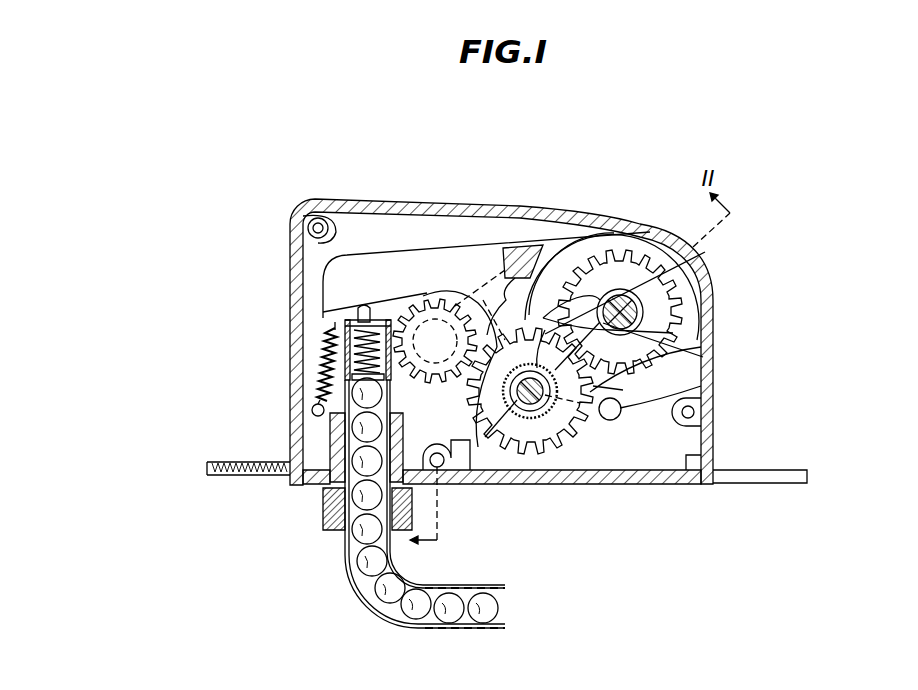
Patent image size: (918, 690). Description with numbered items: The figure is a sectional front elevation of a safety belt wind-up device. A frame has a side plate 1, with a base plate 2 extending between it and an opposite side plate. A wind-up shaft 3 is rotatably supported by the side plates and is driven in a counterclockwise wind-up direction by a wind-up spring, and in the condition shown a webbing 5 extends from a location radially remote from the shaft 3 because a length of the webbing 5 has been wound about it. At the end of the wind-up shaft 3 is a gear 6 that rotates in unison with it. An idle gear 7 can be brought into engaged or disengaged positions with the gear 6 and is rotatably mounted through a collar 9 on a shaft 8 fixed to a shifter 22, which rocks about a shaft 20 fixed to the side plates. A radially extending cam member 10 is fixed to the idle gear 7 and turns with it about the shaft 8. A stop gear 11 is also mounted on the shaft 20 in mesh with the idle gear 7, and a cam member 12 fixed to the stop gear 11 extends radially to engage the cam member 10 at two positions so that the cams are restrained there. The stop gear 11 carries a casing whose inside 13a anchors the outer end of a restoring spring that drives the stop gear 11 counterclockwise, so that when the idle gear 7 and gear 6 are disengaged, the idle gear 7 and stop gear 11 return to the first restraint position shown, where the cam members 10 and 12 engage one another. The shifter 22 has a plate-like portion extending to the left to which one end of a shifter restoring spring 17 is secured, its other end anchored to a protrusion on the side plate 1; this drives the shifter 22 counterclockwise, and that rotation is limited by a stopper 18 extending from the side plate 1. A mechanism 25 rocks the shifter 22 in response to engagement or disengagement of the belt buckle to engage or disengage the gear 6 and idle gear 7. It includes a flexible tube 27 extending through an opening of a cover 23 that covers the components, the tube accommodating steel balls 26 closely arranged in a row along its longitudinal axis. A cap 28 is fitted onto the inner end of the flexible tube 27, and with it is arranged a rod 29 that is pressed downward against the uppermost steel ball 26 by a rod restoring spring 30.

The side plate 1 is at (681, 458).
The base plate 2 is at (738, 476).
The wind-up shaft 3 is at (466, 440).
The webbing 5 is at (256, 462).
The gear 6 is at (427, 295).
The idle gear 7 is at (556, 440).
The shaft 8 is at (531, 412).
The collar 9 is at (567, 400).
The cam member 10 is at (548, 300).
The stop gear 11 is at (632, 250).
The cam member 12 is at (645, 313).
The inside of casing 13a is at (697, 276).
The shifter restoring spring 17 is at (320, 385).
The stopper 18 is at (701, 405).
The shaft 20 is at (701, 362).
The shifter 22 is at (463, 257).
The cover 23 is at (445, 206).
The mechanism 25 is at (355, 593).
The steel balls 26 is at (447, 624).
The flexible tube 27 is at (490, 630).
The cap 28 is at (391, 378).
The rod 29 is at (357, 310).
The rod restoring spring 30 is at (332, 322).